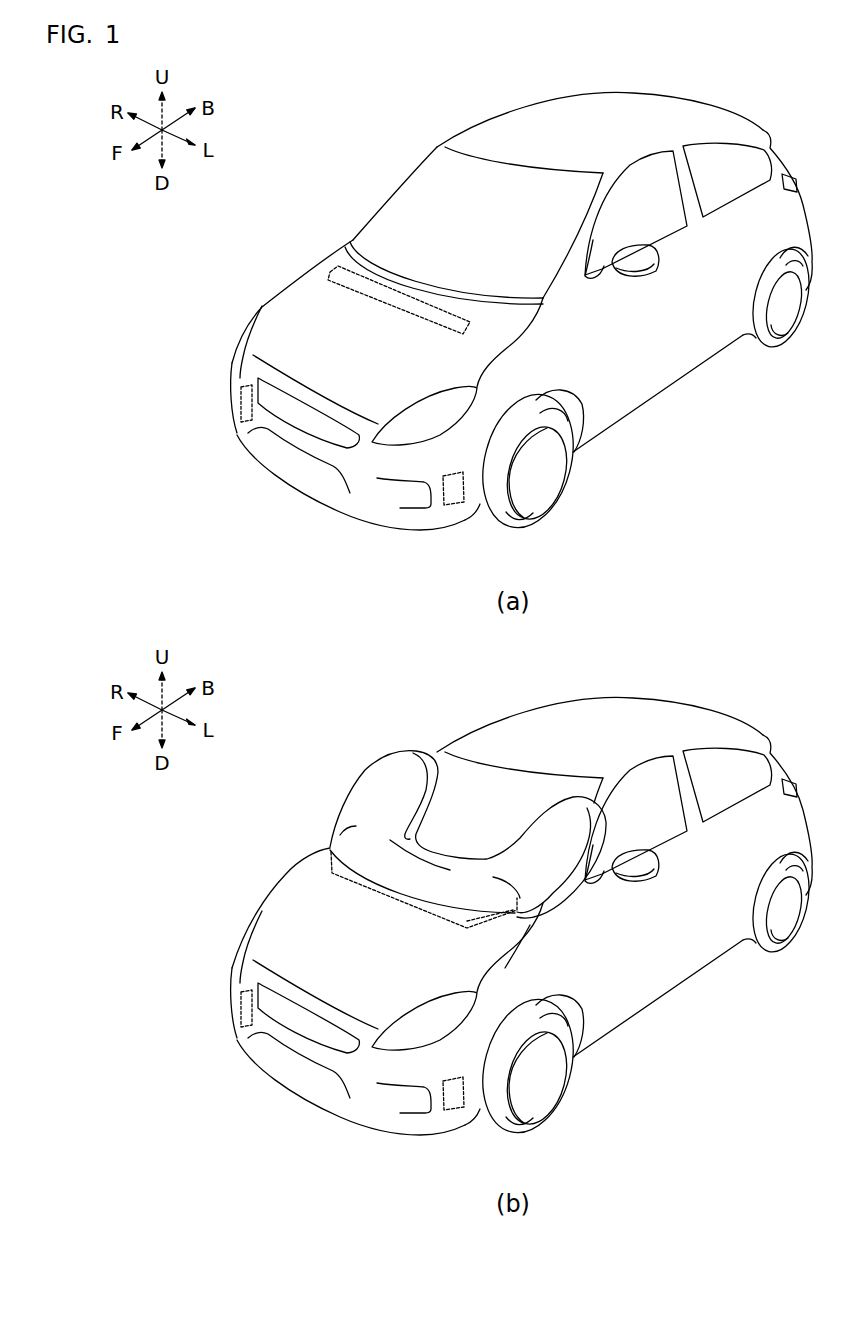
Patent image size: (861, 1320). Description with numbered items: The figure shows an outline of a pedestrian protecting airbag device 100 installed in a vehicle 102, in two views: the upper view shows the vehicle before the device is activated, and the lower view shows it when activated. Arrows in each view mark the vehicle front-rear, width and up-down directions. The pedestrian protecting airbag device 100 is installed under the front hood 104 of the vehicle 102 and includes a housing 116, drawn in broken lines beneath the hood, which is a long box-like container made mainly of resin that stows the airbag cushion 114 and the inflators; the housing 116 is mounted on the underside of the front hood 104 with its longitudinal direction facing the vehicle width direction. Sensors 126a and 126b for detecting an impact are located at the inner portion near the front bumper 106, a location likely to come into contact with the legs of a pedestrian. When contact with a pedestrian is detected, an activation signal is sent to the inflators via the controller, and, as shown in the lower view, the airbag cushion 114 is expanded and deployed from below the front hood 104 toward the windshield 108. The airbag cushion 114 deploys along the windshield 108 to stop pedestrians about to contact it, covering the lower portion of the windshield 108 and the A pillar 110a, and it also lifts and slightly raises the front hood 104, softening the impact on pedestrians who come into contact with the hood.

The pedestrian protecting airbag device 100 is at (492, 610).
The vehicle 102 is at (533, 108).
The front hood 104 is at (492, 347).
The front bumper 106 is at (360, 485).
The windshield 108 is at (557, 188).
The A pillar 110a is at (600, 212).
The airbag cushion 114 is at (373, 776).
The housing 116 is at (328, 273).
The sensor 126a is at (452, 510).
The sensor 126b is at (234, 405).